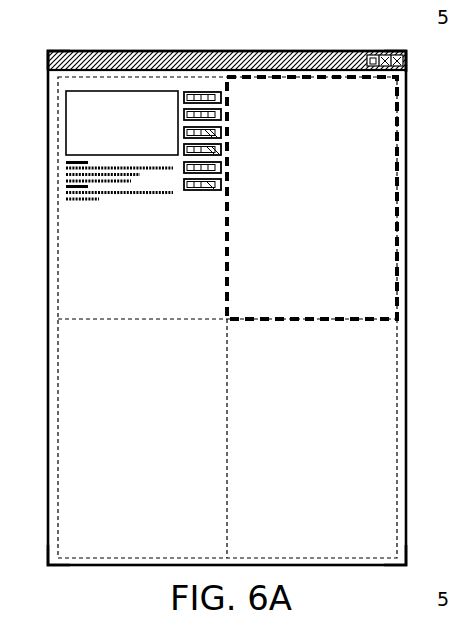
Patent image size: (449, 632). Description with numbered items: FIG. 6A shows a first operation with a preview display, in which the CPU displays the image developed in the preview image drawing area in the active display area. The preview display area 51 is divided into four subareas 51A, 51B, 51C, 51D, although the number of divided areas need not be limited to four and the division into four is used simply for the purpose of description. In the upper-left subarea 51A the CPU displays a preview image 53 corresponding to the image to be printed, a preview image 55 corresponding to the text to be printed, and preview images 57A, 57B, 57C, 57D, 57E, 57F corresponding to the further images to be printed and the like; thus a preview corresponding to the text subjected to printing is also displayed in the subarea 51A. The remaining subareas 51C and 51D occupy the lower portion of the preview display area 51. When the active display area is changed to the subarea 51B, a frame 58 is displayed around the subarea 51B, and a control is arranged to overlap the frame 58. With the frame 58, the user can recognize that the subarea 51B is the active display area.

The preview display area 51 is at (305, 52).
The subarea 51A is at (58, 97).
The subarea 51B is at (400, 93).
The subarea 51C is at (48, 565).
The subarea 51D is at (406, 565).
The preview image 53 is at (72, 121).
The preview image 55 is at (178, 222).
The preview image 57A is at (221, 97).
The preview image 57B is at (221, 114).
The preview image 57C is at (221, 132).
The preview image 57D is at (221, 149).
The preview image 57E is at (221, 167).
The preview image 57F is at (221, 184).
The frame 58 is at (401, 160).